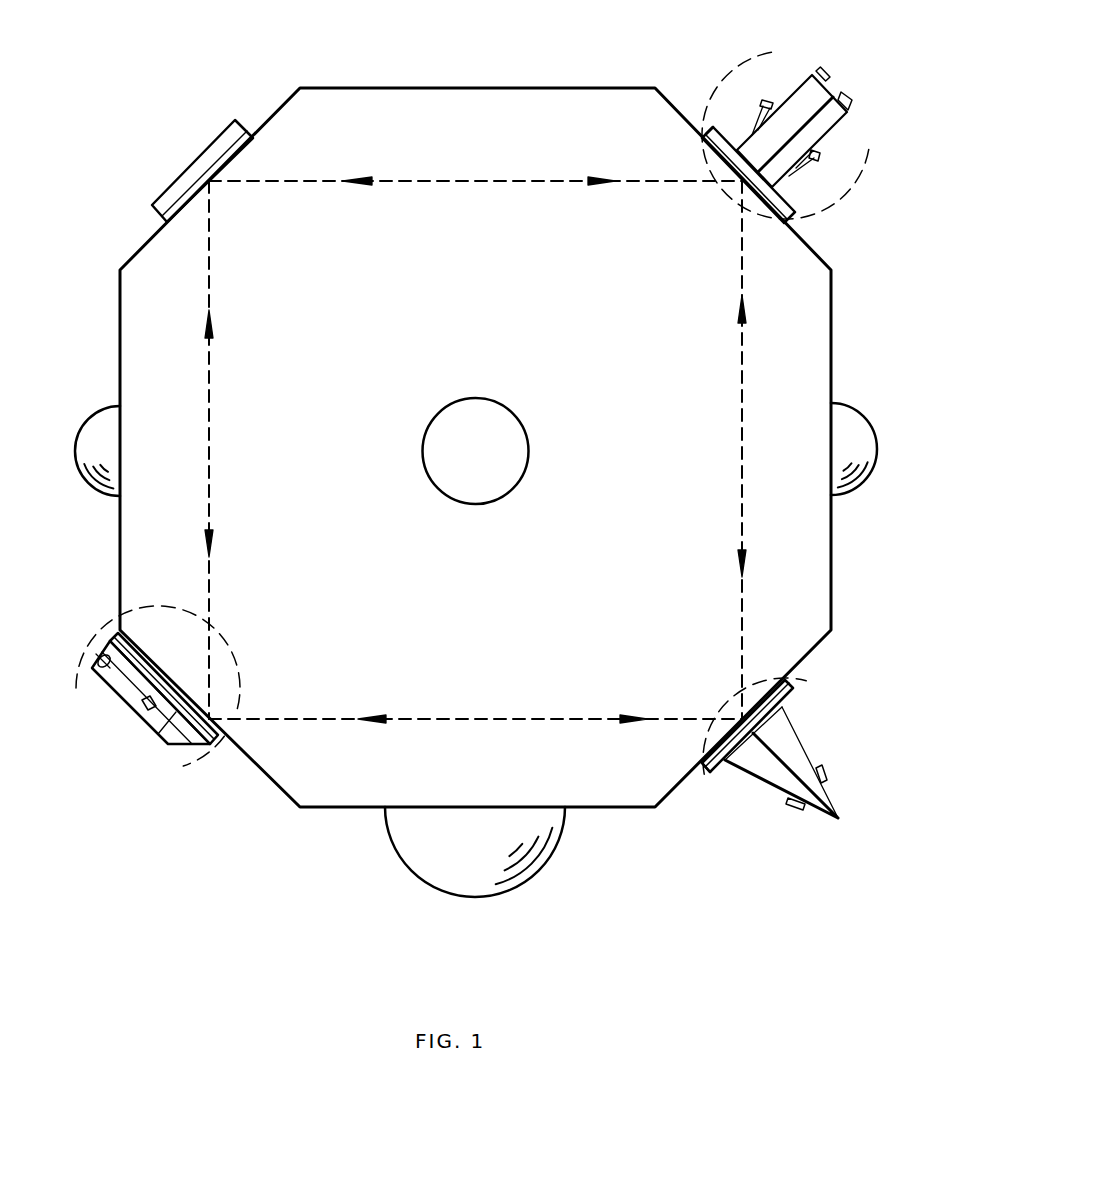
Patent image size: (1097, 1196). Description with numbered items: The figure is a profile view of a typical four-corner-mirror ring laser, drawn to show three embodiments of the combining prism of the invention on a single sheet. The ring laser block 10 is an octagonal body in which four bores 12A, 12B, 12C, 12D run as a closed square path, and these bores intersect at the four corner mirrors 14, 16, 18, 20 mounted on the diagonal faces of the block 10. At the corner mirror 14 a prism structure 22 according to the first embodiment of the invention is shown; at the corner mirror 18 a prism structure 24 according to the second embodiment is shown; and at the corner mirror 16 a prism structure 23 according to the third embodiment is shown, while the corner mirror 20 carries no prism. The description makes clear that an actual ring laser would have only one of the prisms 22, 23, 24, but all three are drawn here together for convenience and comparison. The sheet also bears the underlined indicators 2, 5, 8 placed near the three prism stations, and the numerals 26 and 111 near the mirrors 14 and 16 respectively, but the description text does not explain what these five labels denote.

The section view indicator 2 is at (790, 67).
The section view indicator 5 is at (84, 713).
The section view indicator 8 is at (768, 686).
The ring laser block 10 is at (826, 624).
The bore 12A is at (742, 612).
The bore 12B is at (522, 719).
The bore 12C is at (210, 430).
The bore 12D is at (465, 182).
The corner mirror 14 is at (763, 204).
The corner mirror 16 is at (733, 733).
The corner mirror 18 is at (198, 708).
The corner mirror 20 is at (202, 204).
The prism structure 22 is at (755, 92).
The prism structure 23 is at (793, 822).
The prism structure 24 is at (125, 735).
The plate end 26 is at (711, 127).
The plate end 111 is at (713, 776).